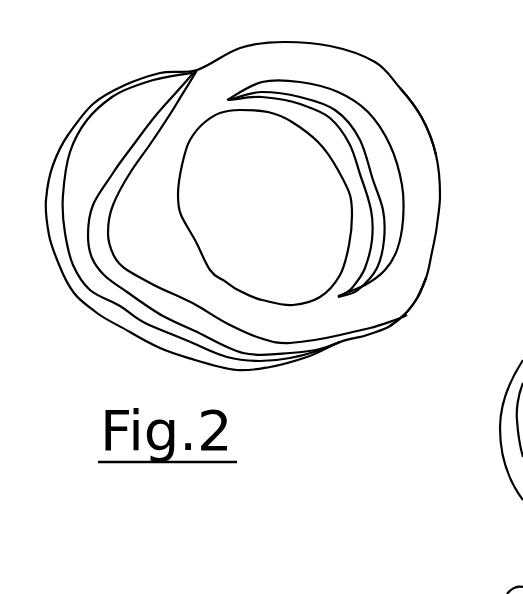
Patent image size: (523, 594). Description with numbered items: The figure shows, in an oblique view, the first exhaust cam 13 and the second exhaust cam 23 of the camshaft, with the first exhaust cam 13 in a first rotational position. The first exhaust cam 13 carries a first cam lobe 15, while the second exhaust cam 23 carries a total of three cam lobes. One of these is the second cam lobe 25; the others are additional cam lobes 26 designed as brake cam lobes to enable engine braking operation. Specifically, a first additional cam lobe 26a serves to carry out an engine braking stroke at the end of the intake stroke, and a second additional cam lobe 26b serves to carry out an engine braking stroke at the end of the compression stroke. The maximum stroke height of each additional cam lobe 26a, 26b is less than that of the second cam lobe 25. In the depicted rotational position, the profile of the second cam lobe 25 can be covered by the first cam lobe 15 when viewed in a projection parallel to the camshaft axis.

The first exhaust cam 13 is at (127, 90).
The first cam lobe 15 is at (85, 150).
The second exhaust cam 23 is at (328, 78).
The second cam lobe 25 is at (142, 235).
The additional cam lobe 26 is at (398, 87).
The first additional cam lobe 26a is at (410, 293).
The second additional cam lobe 26b is at (409, 107).